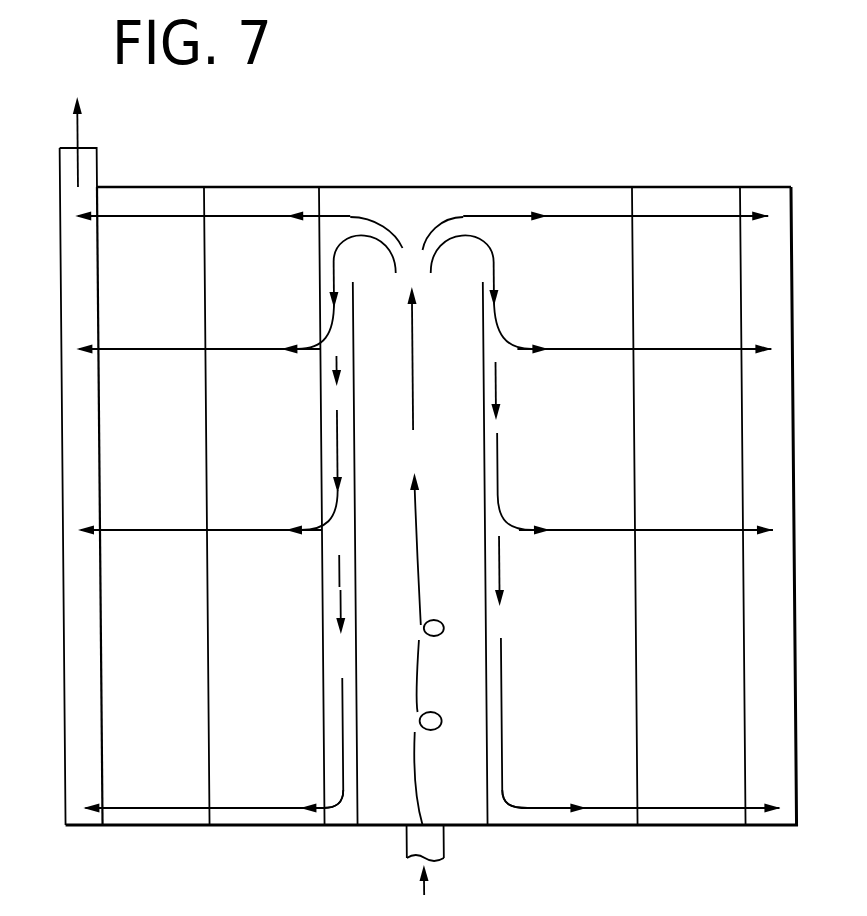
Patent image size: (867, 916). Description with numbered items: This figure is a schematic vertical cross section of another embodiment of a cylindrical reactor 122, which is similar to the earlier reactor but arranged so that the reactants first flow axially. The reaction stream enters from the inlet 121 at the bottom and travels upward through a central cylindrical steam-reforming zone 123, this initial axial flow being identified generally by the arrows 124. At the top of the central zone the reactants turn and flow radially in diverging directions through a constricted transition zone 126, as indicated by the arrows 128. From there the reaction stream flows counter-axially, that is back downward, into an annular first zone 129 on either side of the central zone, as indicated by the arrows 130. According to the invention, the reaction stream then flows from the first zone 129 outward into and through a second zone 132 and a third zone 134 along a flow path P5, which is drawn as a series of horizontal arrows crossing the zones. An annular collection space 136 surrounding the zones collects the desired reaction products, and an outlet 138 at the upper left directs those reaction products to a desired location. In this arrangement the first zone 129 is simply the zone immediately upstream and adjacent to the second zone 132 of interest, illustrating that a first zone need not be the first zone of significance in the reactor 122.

The inlet 121 is at (423, 842).
The cylindrical reactor 122 is at (522, 136).
The central cylindrical steam-reforming zone 123 is at (470, 552).
The arrows 124 is at (413, 387).
The constricted transition zone 126 is at (435, 222).
The arrows 128 is at (350, 217).
The annular first zone 129 is at (340, 810).
The arrows 130 is at (337, 360).
The second zone 132 is at (278, 470).
The third zone 134 is at (177, 574).
The annular collection space 136 is at (81, 680).
The outlet 138 is at (84, 150).
The flow path P5 is at (147, 206).